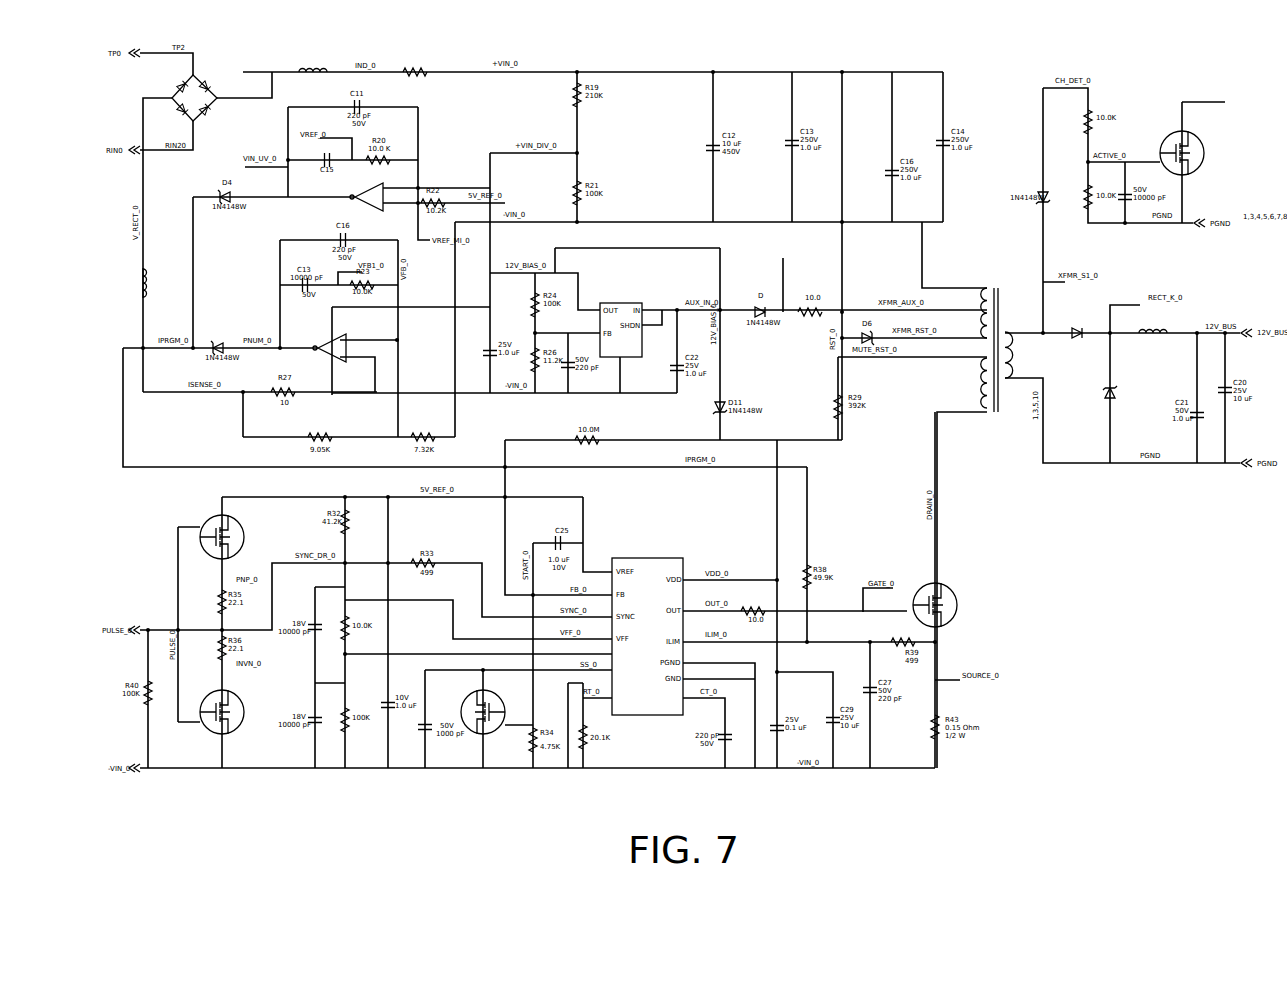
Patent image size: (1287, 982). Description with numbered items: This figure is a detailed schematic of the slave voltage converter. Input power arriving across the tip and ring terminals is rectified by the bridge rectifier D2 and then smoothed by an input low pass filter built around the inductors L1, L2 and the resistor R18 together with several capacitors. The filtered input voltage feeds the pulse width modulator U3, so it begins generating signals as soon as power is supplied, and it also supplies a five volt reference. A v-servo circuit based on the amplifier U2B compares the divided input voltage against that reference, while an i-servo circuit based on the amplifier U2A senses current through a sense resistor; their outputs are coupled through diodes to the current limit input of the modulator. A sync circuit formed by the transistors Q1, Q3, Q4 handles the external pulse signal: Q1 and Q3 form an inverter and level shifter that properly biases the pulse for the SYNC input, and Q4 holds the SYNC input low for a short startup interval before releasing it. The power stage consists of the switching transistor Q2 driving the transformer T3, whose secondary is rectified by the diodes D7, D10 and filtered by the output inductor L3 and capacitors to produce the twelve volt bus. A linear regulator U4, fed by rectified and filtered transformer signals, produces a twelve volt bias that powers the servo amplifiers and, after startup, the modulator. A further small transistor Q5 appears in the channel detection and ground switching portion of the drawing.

The rectifier D2 is at (200, 103).
The inductor L1 is at (313, 62).
The resistor R18 is at (415, 62).
The operational amplifier U2B is at (360, 191).
The operational amplifier U2A is at (320, 340).
The linear voltage regulator U4 is at (621, 321).
The pulse width modulator U3 is at (647, 636).
The transformer T3 is at (996, 346).
The transistor Q1 is at (233, 537).
The transistor Q2 is at (952, 605).
The transistor Q3 is at (234, 712).
The transistor Q4 is at (494, 705).
The transistor Q5 is at (1191, 154).
The diode D7 is at (1079, 333).
The diode D10 is at (1128, 388).
The inductor L3 is at (1153, 323).
The inductor L2 is at (158, 283).